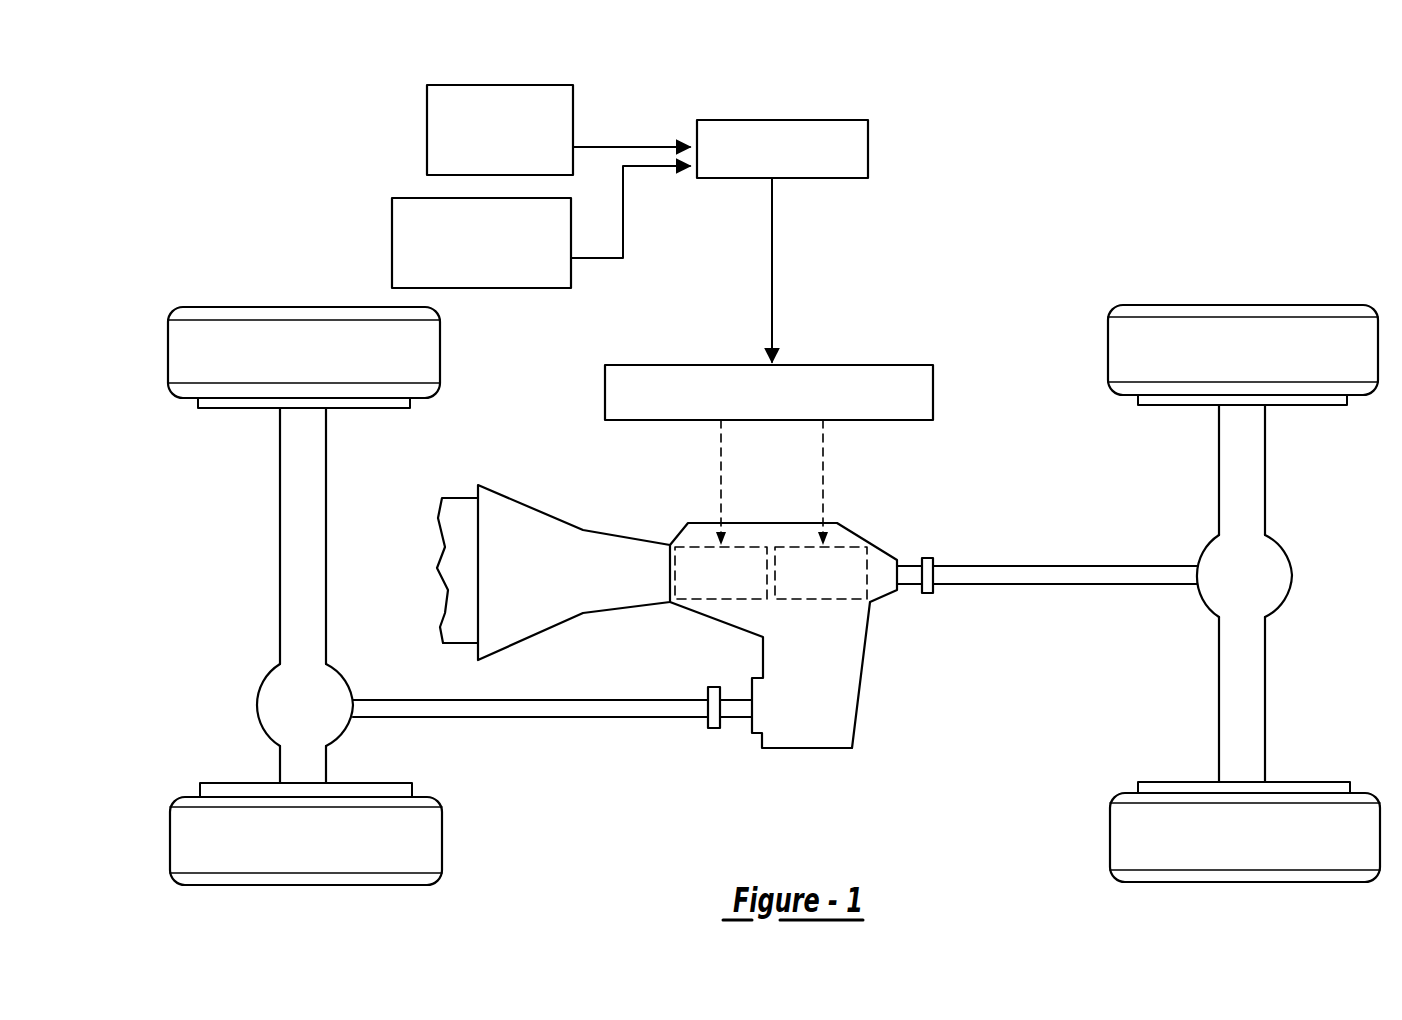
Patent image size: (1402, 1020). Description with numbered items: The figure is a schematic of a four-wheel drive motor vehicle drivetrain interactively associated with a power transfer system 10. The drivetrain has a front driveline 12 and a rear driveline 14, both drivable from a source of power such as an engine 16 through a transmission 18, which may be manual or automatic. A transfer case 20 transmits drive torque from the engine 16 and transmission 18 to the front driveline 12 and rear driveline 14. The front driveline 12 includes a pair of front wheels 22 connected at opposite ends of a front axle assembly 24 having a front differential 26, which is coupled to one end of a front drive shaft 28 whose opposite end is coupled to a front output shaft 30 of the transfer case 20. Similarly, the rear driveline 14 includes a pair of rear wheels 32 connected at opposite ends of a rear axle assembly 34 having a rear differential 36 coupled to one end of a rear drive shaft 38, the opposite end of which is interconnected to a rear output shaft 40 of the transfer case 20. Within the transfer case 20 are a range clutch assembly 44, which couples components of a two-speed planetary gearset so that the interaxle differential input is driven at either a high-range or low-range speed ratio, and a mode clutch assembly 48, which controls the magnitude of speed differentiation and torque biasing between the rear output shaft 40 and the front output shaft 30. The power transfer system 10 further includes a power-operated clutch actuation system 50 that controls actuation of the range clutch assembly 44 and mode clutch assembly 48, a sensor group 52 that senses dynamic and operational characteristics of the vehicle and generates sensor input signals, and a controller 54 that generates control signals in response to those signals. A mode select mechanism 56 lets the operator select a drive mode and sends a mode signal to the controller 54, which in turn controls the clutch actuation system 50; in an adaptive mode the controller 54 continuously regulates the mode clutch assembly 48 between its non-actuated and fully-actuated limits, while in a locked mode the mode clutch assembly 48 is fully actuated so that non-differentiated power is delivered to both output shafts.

The power transfer system 10 is at (946, 192).
The front driveline 12 is at (364, 606).
The rear driveline 14 is at (1108, 540).
The engine 16 is at (457, 583).
The transmission 18 is at (572, 598).
The transfer case 20 is at (895, 608).
The front wheels 22 is at (206, 325).
The front axle assembly 24 is at (296, 466).
The front differential 26 is at (266, 690).
The front drive shaft 28 is at (668, 710).
The front output shaft 30 is at (733, 712).
The rear wheels 32 is at (1247, 335).
The rear axle assembly 34 is at (1239, 457).
The rear differential 36 is at (1262, 587).
The rear drive shaft 38 is at (1098, 578).
The rear output shaft 40 is at (905, 568).
The range clutch assembly 44 is at (735, 600).
The mode clutch assembly 48 is at (830, 600).
The clutch actuation system 50 is at (933, 380).
The sensor group 52 is at (427, 147).
The controller 54 is at (772, 120).
The mode select mechanism 56 is at (498, 288).